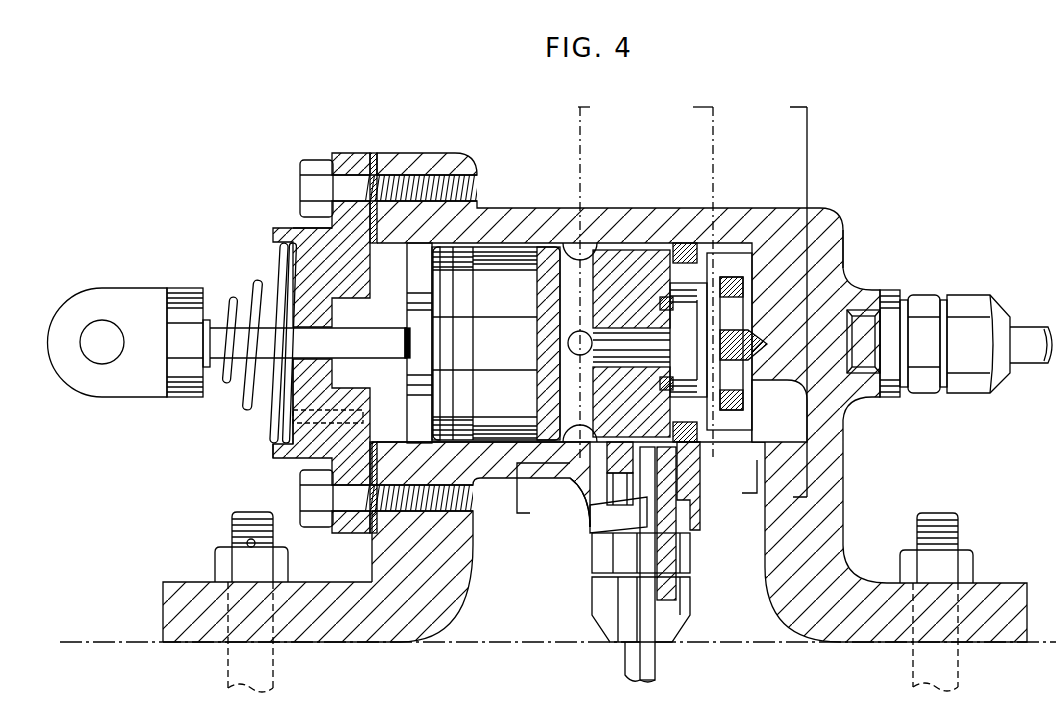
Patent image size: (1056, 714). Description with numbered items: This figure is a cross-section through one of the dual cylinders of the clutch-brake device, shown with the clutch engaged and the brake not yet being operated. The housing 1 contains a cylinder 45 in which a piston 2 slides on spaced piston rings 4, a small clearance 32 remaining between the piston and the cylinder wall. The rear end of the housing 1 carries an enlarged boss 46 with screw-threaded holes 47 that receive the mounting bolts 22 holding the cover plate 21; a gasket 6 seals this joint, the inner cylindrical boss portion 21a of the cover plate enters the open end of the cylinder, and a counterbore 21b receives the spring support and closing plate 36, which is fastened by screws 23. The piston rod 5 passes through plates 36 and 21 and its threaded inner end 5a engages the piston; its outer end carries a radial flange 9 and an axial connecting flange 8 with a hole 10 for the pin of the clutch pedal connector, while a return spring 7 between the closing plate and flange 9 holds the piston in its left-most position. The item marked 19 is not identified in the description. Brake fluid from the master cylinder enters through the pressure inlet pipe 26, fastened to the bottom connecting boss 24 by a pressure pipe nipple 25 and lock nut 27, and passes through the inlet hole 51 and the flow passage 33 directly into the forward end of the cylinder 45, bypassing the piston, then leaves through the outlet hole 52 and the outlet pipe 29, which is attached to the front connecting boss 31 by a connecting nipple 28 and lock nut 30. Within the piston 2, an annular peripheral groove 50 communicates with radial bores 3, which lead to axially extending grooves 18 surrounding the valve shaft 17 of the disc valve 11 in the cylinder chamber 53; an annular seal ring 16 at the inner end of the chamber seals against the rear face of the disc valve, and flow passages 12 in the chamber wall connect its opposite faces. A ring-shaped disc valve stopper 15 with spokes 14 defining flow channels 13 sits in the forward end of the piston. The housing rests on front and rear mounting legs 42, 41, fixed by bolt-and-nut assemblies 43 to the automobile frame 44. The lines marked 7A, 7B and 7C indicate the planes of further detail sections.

The housing 1 is at (603, 227).
The piston 2 is at (513, 267).
The radial bores 3 is at (575, 330).
The piston rings 4 is at (467, 253).
The piston rod 5 is at (245, 333).
The threaded portion 5a is at (403, 375).
The gasket 6 is at (380, 208).
The return spring 7 is at (227, 313).
The axial connecting flange 8 is at (83, 303).
The radial flange 9 is at (183, 320).
The hole 10 is at (107, 330).
The disc valve 11 is at (733, 312).
The flow passages 12 is at (693, 310).
The fluid pressure flow channels 13 is at (750, 320).
The spokes 14 is at (757, 323).
The disc valve stopper 15 is at (820, 330).
The annular seal ring 16 is at (660, 303).
The valve shaft 17 is at (638, 330).
The axial grooves 18 is at (620, 327).
The spring seat 19 is at (418, 293).
The cover plate 21 is at (348, 162).
The inner cylindrical boss portion 21a is at (397, 272).
The counterbore 21b is at (330, 387).
The mounting bolts 22 is at (312, 168).
The screws 23 is at (313, 420).
The connecting boss 24 is at (692, 520).
The pressure pipe nipple 25 is at (690, 552).
The pressure inlet pipe 26 is at (640, 667).
The lock nut 27 is at (690, 590).
The pressure pipe connecting nipple 28 is at (927, 307).
The pressure fluid outlet pipe 29 is at (1030, 337).
The lock nut 30 is at (970, 307).
The connecting boss 31 is at (900, 397).
The clearance 32 is at (488, 445).
The flow passage 33 is at (687, 450).
The spring support and closing plate 36 is at (273, 450).
The rear mounting leg 41 is at (207, 632).
The front mounting leg 42 is at (857, 630).
The bolt-and-nut assemblies 43 is at (957, 523).
The automobile frame 44 is at (100, 640).
The cylinder 45 is at (434, 245).
The enlarged boss 46 is at (380, 527).
The screw-threaded holes 47 is at (455, 580).
The annular peripheral groove 50 is at (573, 475).
The pressure fluid inlet hole 51 is at (597, 543).
The outlet hole 52 is at (855, 320).
The cylinder chamber 53 is at (838, 420).
The section line 7A is at (566, 311).
The section line 7B is at (712, 302).
The section line 7C is at (786, 303).